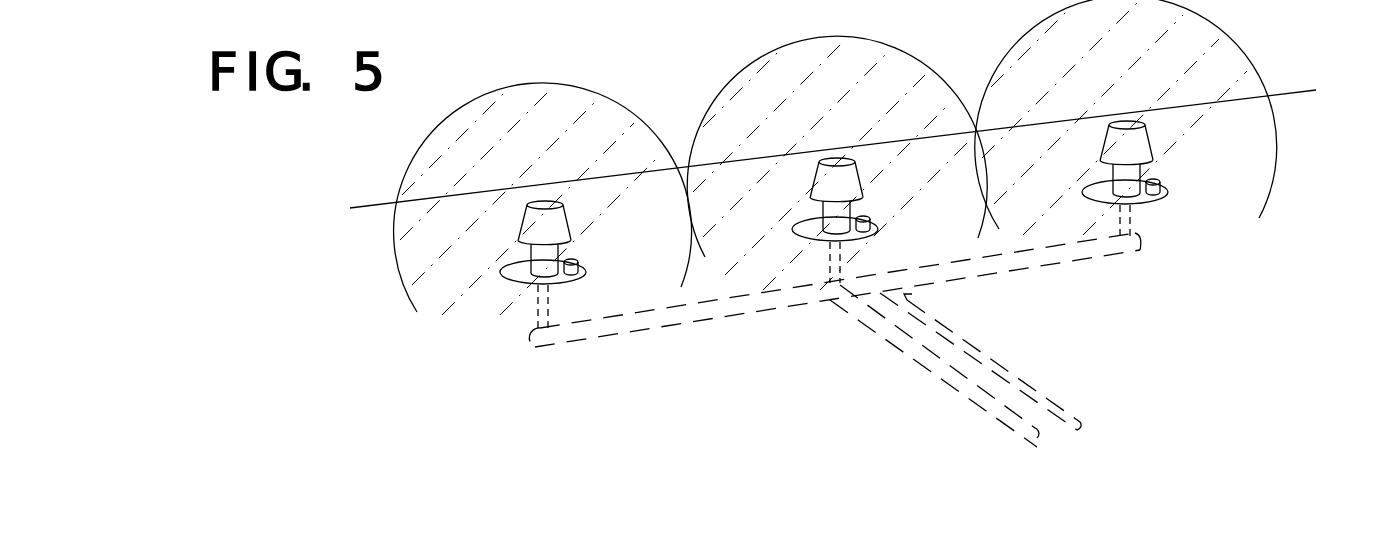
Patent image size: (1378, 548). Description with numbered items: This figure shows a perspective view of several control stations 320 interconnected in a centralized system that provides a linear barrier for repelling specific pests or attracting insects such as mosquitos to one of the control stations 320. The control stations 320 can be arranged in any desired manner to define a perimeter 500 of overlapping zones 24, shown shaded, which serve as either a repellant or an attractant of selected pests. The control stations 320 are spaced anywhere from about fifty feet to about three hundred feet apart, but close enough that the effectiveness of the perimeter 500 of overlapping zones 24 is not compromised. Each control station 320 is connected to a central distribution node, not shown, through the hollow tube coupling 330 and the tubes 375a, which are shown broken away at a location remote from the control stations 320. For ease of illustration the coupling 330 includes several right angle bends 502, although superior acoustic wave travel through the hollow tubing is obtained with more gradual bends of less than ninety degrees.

The overlapping zones 24 is at (496, 88).
The control station 320 is at (547, 207).
The hollow tube coupling 330 is at (587, 334).
The tube 375a is at (1045, 392).
The perimeter 500 is at (368, 198).
The right angle bend 502 is at (536, 330).